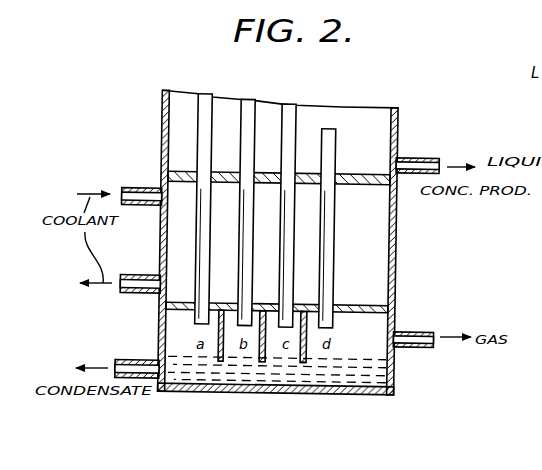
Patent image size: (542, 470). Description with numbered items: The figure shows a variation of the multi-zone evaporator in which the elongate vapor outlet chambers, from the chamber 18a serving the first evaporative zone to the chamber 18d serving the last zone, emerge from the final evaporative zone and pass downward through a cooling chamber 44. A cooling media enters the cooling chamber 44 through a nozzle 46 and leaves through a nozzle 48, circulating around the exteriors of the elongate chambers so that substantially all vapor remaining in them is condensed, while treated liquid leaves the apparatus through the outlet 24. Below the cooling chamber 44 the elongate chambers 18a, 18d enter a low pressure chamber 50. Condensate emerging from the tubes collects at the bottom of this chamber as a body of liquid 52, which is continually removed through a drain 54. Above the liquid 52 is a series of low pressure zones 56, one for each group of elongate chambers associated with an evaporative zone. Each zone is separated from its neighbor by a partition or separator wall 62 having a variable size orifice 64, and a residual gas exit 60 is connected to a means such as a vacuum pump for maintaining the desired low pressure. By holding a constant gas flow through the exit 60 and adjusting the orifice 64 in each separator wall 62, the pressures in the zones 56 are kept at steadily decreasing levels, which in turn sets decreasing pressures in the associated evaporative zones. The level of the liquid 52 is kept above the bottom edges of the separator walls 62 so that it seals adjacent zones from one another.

The elongate chamber 18a is at (197, 115).
The elongate chamber 18d is at (336, 134).
The outlet 24 is at (420, 158).
The cooling chamber 44 is at (380, 248).
The nozzle 46 is at (145, 188).
The nozzle 48 is at (130, 277).
The low pressure chamber 50 is at (372, 396).
The body of liquid 52 is at (208, 383).
The drain 54 is at (130, 360).
The low pressure zones 56 is at (364, 330).
The residual gas exit 60 is at (418, 348).
The separator wall 62 is at (310, 363).
The variable size orifice 64 is at (305, 336).